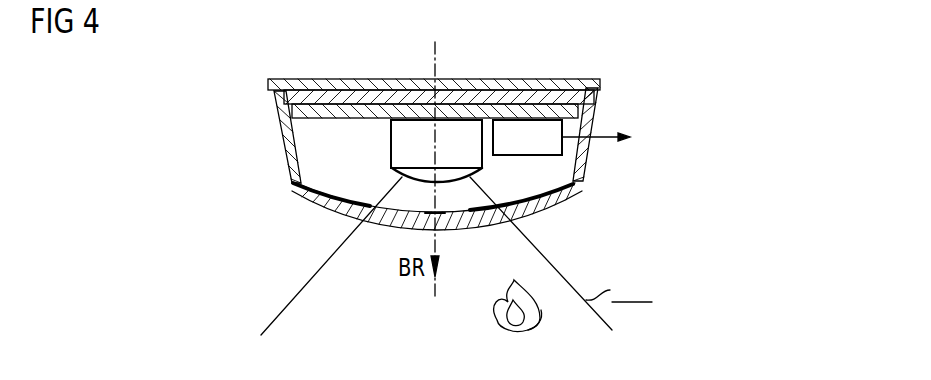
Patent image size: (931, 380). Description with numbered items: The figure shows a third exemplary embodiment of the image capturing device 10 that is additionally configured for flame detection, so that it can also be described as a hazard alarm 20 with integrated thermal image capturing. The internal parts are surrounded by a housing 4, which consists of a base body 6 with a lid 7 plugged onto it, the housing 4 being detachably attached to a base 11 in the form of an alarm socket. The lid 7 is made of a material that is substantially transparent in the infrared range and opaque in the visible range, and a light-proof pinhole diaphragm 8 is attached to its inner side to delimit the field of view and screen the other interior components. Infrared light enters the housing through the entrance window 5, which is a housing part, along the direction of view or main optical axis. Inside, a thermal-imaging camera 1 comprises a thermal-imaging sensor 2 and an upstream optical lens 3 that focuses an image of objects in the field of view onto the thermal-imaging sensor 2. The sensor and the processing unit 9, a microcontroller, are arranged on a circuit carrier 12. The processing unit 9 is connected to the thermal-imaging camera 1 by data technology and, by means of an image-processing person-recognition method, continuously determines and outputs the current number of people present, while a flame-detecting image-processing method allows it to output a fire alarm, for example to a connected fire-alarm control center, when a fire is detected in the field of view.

The thermal-imaging camera 1 is at (392, 169).
The thermal-imaging sensor 2 is at (392, 137).
The optical lens 3 is at (482, 170).
The housing 4 is at (400, 185).
The entrance window 5 is at (484, 232).
The base body 6 is at (281, 118).
The lid 7 is at (307, 203).
The pinhole diaphragm 8 is at (328, 210).
The processing unit 9 is at (512, 127).
The image capturing device 10 is at (483, 180).
The base 11 is at (290, 80).
The circuit carrier 12 is at (352, 108).
The hazard alarm with integrated thermal image capturing 20 is at (660, 67).